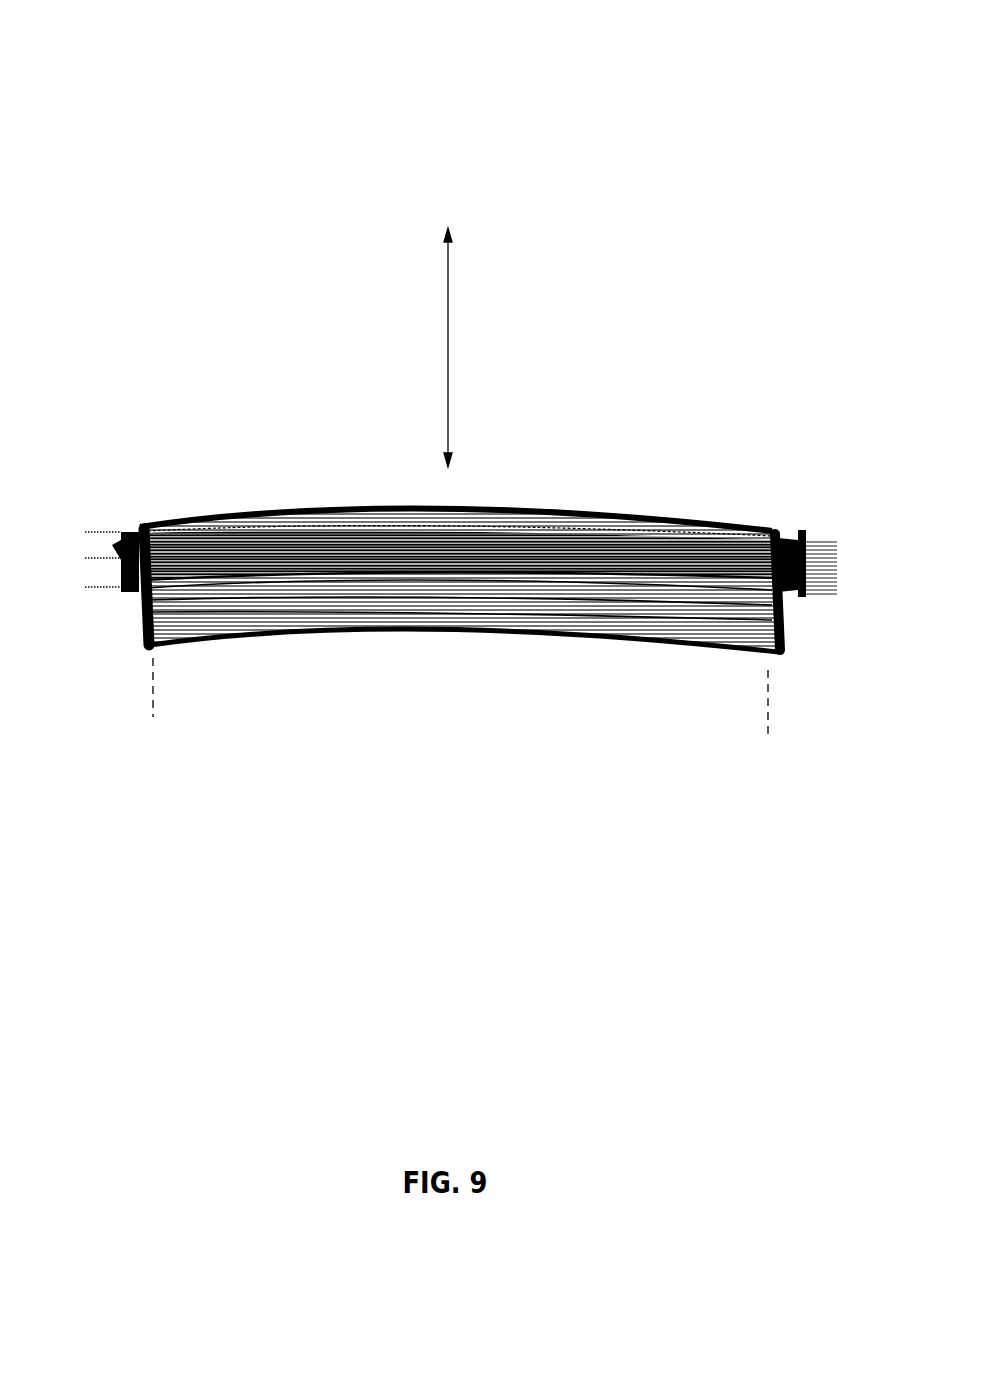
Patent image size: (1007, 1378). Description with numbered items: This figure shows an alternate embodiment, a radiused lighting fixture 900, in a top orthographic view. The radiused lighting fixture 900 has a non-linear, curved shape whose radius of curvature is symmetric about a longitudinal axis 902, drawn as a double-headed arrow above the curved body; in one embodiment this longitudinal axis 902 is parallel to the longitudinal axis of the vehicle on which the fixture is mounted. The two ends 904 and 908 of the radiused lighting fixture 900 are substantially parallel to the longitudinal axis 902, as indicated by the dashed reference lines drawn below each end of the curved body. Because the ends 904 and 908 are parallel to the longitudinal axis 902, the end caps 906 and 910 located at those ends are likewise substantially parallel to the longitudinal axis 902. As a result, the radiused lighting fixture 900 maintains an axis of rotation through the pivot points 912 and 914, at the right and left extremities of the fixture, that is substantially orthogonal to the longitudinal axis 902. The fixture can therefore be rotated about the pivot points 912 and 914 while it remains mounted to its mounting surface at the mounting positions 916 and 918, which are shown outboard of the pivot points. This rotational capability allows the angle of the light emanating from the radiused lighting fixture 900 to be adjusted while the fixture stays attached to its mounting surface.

The radiused lighting fixture 900 is at (592, 147).
The longitudinal axis 902 is at (448, 433).
The end 904 is at (765, 723).
The end cap 906 is at (782, 636).
The end 908 is at (163, 708).
The end cap 910 is at (133, 627).
The pivot point 912 is at (792, 536).
The pivot point 914 is at (134, 530).
The mounting position 916 is at (823, 568).
The mounting position 918 is at (97, 563).